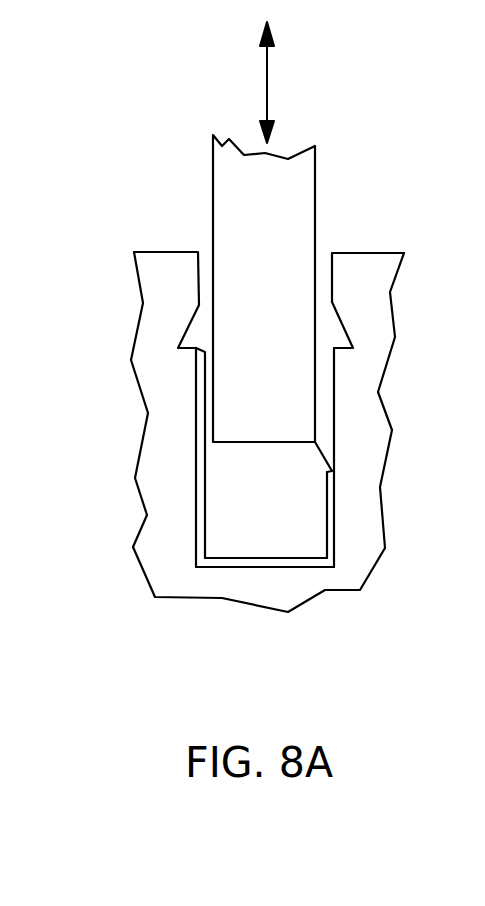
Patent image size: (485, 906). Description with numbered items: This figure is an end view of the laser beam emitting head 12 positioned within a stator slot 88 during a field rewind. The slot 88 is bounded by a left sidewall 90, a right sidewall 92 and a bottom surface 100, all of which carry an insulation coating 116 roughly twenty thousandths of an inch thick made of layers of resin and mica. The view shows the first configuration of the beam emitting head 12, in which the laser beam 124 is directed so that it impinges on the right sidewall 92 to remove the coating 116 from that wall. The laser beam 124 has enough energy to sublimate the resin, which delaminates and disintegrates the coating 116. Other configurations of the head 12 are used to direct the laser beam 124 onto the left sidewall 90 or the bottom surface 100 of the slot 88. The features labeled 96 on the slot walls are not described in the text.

The beam emitting head 12 is at (240, 412).
The slot 88 is at (210, 255).
The left sidewall 90 is at (193, 518).
The right sidewall 92 is at (338, 522).
The tabs 96 is at (187, 345).
The bottom surface 100 is at (255, 568).
The insulation coating 116 is at (225, 556).
The laser beam 124 is at (328, 449).